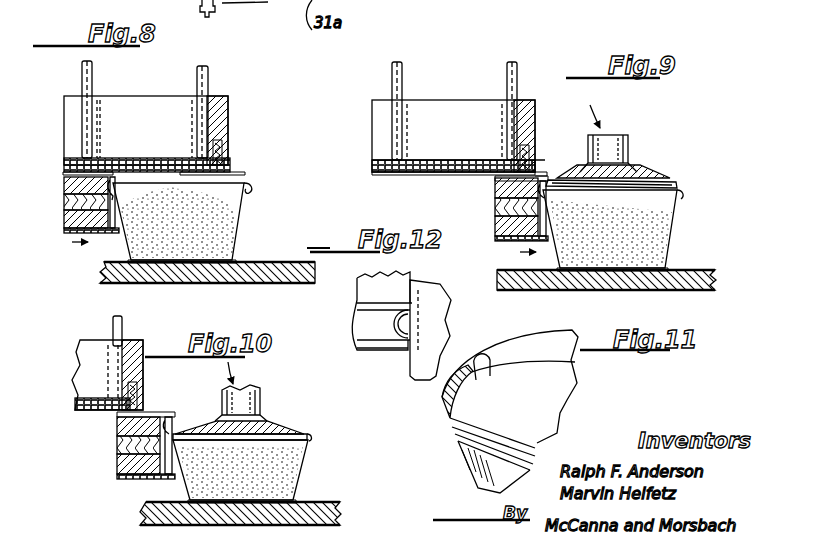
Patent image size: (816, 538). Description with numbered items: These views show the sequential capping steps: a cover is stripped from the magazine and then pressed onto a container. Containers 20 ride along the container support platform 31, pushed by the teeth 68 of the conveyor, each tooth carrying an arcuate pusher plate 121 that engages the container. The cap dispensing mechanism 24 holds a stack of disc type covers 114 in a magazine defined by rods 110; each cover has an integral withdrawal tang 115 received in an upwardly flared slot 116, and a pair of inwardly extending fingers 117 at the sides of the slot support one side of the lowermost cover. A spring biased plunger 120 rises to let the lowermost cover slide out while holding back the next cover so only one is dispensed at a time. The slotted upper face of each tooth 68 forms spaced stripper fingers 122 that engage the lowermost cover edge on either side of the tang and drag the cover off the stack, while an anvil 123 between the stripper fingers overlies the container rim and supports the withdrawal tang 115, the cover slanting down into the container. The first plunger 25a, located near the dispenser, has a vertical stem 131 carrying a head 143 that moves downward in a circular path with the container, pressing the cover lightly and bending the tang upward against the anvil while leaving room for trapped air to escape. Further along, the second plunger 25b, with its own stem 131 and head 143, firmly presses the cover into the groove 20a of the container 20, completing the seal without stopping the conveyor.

In FIG. 8, the container 20 is at (240, 240).
In FIG. 9, the container 20 is at (676, 238).
In FIG. 10, the container 20 is at (298, 486).
In FIG. 11, the container 20 is at (462, 473).
In FIG. 8, the groove 20a is at (250, 191).
In FIG. 9, the groove 20a is at (682, 193).
In FIG. 11, the groove 20a is at (450, 436).
In FIG. 8, the cap dispensing mechanism 24 is at (233, 103).
In FIG. 9, the cap dispensing mechanism 24 is at (538, 105).
In FIG. 10, the cap dispensing mechanism 24 is at (146, 341).
In FIG. 9, the first plunger 25a is at (632, 139).
In FIG. 10, the second plunger 25b is at (310, 429).
In FIG. 8, the container support platform 31 is at (262, 273).
In FIG. 9, the container support platform 31 is at (684, 273).
In FIG. 10, the container support platform 31 is at (315, 511).
In FIG. 8, the teeth 68 is at (64, 216).
In FIG. 9, the teeth 68 is at (495, 196).
In FIG. 12, the teeth 68 is at (410, 283).
In FIG. 10, the teeth 68 is at (117, 462).
In FIG. 8, the rods 110 is at (209, 74).
In FIG. 9, the rods 110 is at (518, 72).
In FIG. 9, the disc type cover 114 is at (415, 160).
In FIG. 12, the disc type cover 114 is at (440, 326).
In FIG. 11, the disc type cover 114 is at (553, 403).
In FIG. 9, the withdrawal tang 115 is at (380, 160).
In FIG. 12, the withdrawal tang 115 is at (405, 345).
In FIG. 11, the withdrawal tang 115 is at (498, 352).
In FIG. 8, the slot 116 is at (70, 128).
In FIG. 9, the slot 116 is at (378, 120).
In FIG. 8, the fingers 117 is at (64, 172).
In FIG. 9, the fingers 117 is at (405, 175).
In FIG. 8, the spring biased plunger 120 is at (224, 157).
In FIG. 9, the spring biased plunger 120 is at (538, 152).
In FIG. 10, the spring biased plunger 120 is at (138, 392).
In FIG. 8, the pusher plate 121 is at (104, 236).
In FIG. 9, the pusher plate 121 is at (505, 243).
In FIG. 10, the pusher plate 121 is at (130, 480).
In FIG. 9, the stripper fingers 122 is at (540, 176).
In FIG. 12, the stripper fingers 122 is at (357, 306).
In FIG. 10, the stripper fingers 122 is at (150, 412).
In FIG. 8, the anvil 123 is at (112, 177).
In FIG. 9, the anvil 123 is at (548, 189).
In FIG. 10, the anvil 123 is at (172, 425).
In FIG. 9, the stem 131 is at (622, 150).
In FIG. 10, the stem 131 is at (262, 398).
In FIG. 9, the head 143 is at (648, 176).
In FIG. 10, the head 143 is at (270, 421).